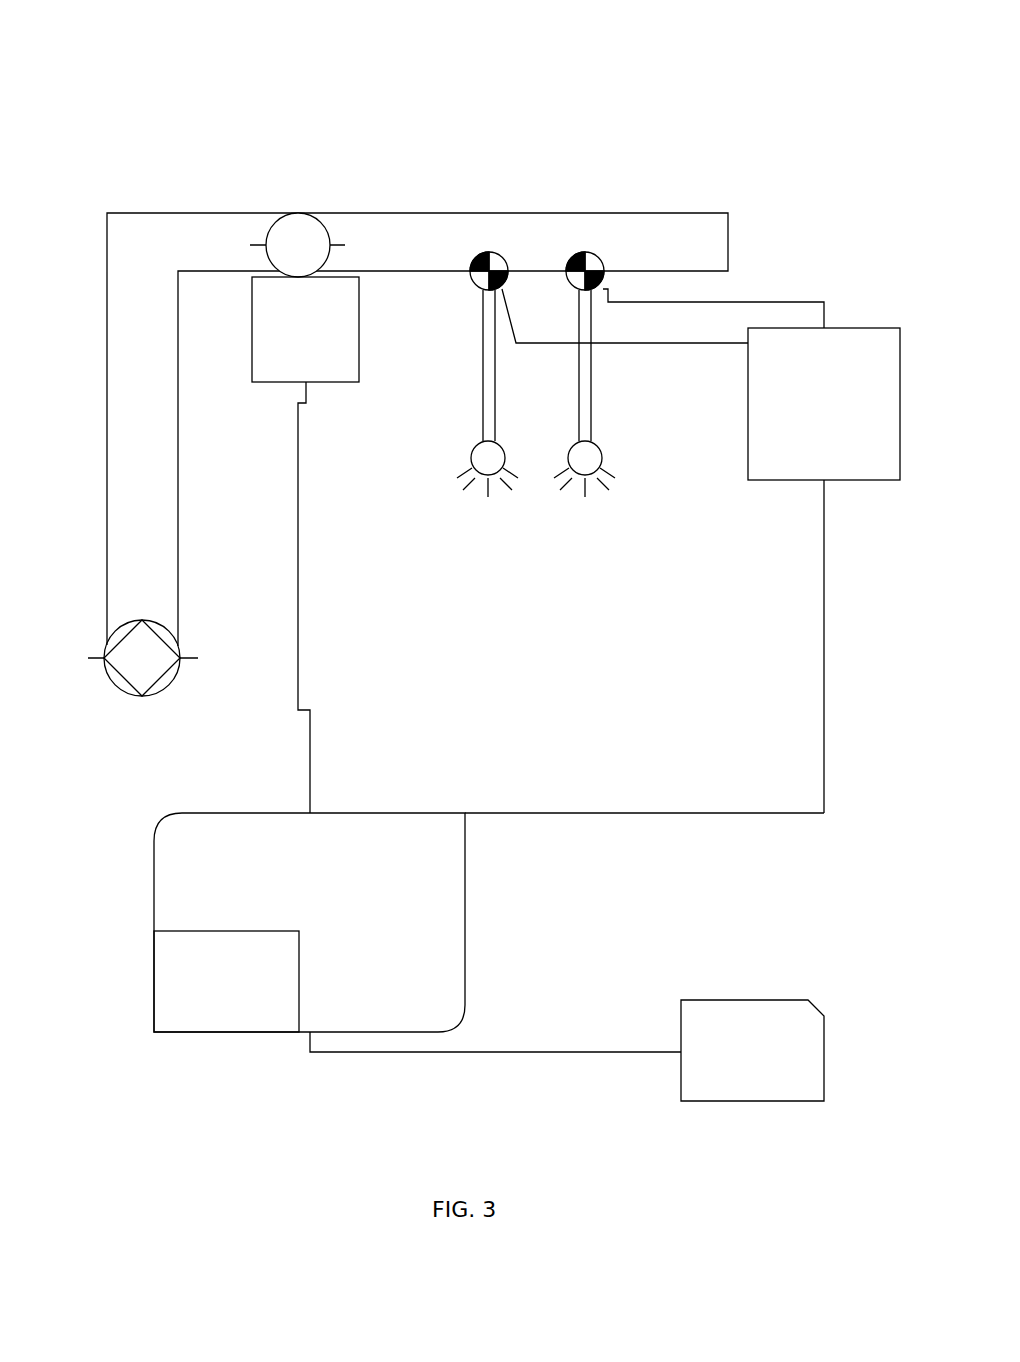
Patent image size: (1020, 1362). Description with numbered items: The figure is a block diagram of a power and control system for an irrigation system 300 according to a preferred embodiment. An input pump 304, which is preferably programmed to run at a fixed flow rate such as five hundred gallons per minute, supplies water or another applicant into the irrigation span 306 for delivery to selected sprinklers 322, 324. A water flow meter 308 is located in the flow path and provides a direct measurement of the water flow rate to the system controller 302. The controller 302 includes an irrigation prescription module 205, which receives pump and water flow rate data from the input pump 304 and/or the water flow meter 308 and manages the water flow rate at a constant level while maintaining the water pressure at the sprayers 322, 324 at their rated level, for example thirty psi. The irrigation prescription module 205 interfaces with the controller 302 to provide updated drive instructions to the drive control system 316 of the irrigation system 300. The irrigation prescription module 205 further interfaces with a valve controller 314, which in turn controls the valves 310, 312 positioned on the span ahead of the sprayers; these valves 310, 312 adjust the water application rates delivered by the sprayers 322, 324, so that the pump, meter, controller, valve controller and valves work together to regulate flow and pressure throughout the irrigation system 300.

The irrigation system 300 is at (349, 93).
The controller 302 is at (417, 885).
The input pump 304 is at (160, 658).
The irrigation span 306 is at (131, 248).
The water flow meter 308 is at (302, 232).
The valve 310 is at (489, 253).
The valve 312 is at (573, 258).
The valve controller 314 is at (887, 448).
The drive control system 316 is at (705, 1027).
The sprinkler 322 is at (478, 453).
The sprinkler 324 is at (602, 458).
The irrigation prescription module 205 is at (167, 955).